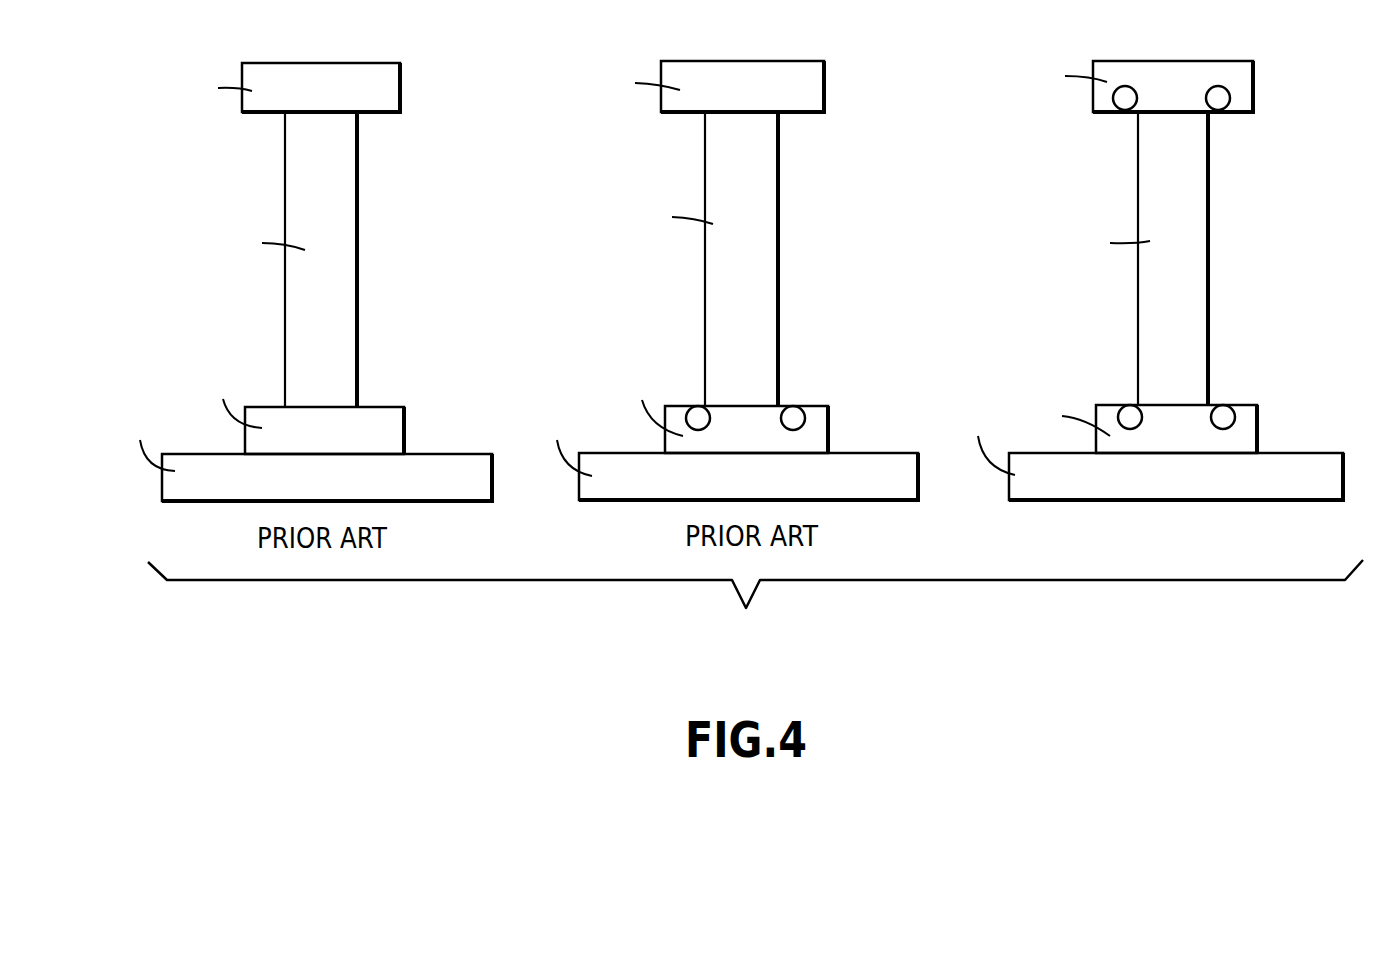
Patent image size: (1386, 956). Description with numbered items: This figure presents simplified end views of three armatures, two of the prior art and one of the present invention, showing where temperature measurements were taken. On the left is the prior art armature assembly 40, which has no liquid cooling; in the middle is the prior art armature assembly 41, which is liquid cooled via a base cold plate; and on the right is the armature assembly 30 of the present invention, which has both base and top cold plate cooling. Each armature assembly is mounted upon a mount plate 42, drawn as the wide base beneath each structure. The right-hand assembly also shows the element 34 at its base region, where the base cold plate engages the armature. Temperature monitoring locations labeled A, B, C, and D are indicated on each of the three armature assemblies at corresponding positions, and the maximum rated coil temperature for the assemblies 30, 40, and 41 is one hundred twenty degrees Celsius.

The armature assembly 30 is at (1155, 256).
The compliant interconnection layer with solder balls 34 is at (1110, 403).
The prior art armature assembly 40 is at (380, 329).
The prior art armature assembly 41 is at (803, 333).
The mount plate 42 is at (492, 460).